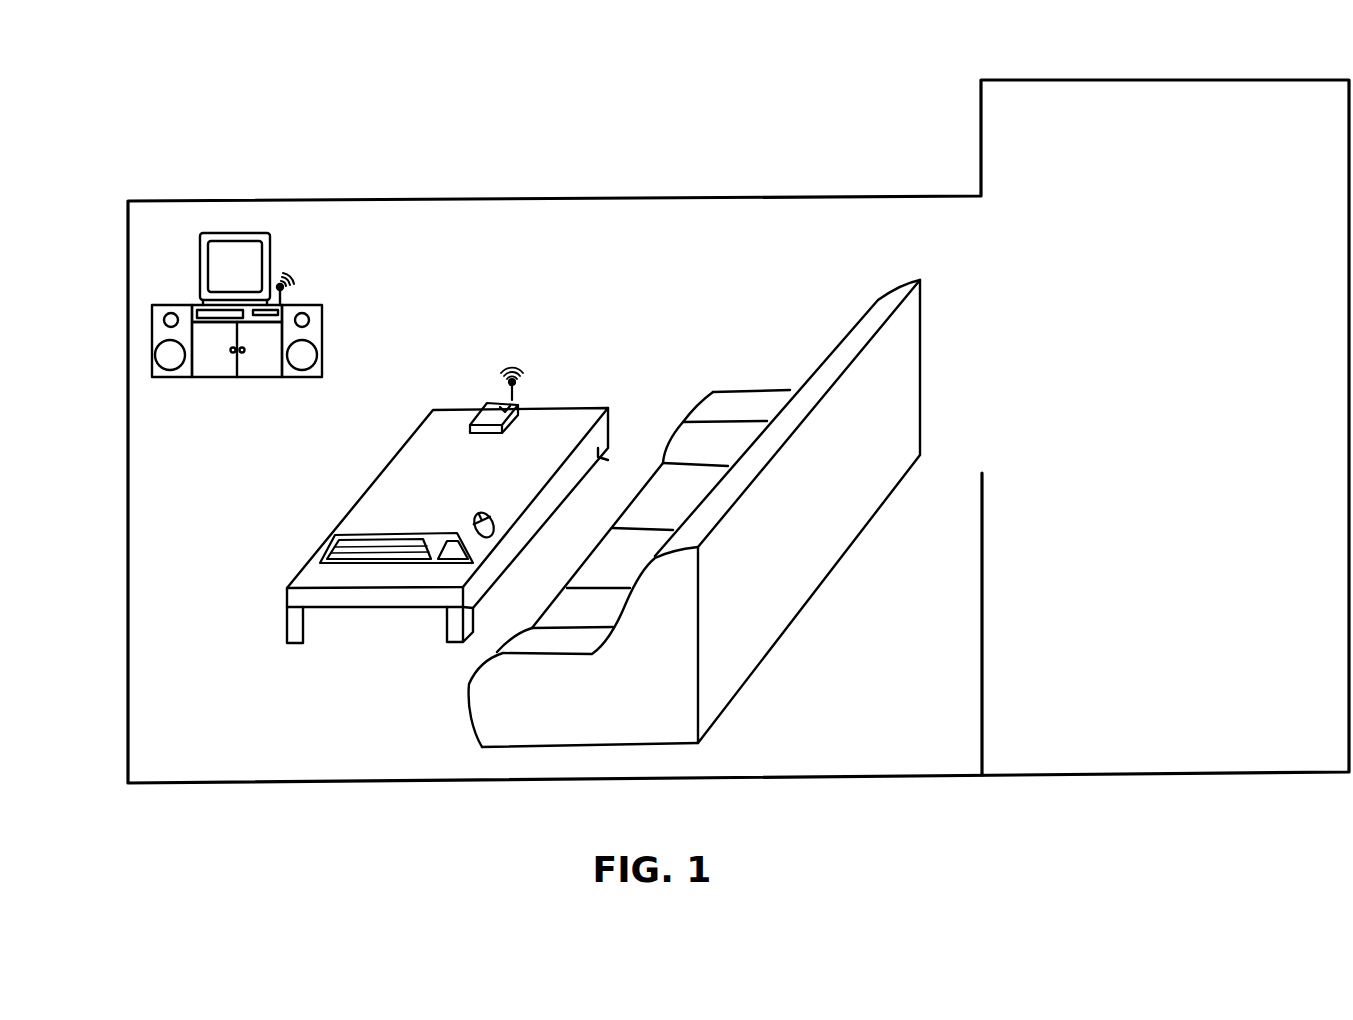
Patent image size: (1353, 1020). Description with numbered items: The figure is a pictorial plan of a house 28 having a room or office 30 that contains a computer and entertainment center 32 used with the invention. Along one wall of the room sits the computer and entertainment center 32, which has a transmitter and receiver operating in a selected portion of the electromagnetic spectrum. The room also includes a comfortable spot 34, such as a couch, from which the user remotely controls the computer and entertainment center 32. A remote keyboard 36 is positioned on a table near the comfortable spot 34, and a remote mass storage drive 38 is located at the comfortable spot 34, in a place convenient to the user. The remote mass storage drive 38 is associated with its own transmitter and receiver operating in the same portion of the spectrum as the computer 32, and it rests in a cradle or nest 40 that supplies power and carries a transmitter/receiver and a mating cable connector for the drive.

The house 28 is at (484, 118).
The room or office 30 is at (705, 198).
The computer and entertainment center 32 is at (198, 303).
The comfortable spot 34 is at (890, 290).
The remote keyboard 36 is at (397, 553).
The remote mass storage drive 38 is at (480, 412).
The cradle or nest 40 is at (518, 423).